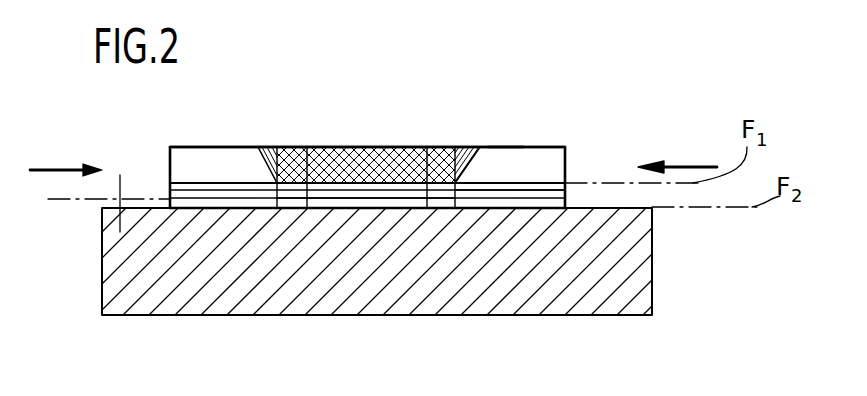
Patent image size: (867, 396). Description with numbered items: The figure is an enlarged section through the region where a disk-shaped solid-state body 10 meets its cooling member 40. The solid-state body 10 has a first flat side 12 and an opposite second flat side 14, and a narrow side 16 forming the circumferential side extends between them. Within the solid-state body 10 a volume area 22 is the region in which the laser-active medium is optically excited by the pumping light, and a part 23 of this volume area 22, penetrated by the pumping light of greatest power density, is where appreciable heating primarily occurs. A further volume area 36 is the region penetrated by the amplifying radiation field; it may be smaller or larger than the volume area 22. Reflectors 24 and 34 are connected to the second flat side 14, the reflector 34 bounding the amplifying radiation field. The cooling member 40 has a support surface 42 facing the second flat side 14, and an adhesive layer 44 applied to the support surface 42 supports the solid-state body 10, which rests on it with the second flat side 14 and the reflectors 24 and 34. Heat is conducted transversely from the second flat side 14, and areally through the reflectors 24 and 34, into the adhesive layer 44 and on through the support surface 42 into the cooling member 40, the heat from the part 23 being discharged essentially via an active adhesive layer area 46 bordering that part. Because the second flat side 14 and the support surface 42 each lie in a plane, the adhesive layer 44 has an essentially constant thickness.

The solid-state body 10 is at (488, 148).
The first flat side 12 is at (523, 147).
The second flat side 14 is at (590, 208).
The narrow side 16 is at (566, 146).
The volume area 22 is at (463, 147).
The part of the volume area 23 is at (330, 147).
The reflector 24 is at (480, 193).
The reflector 34 is at (237, 185).
The volume area 36 is at (393, 147).
The cooling member 40 is at (530, 275).
The support surface 42 is at (595, 188).
The adhesive layer 44 is at (267, 210).
The active adhesive layer area 46 is at (367, 210).